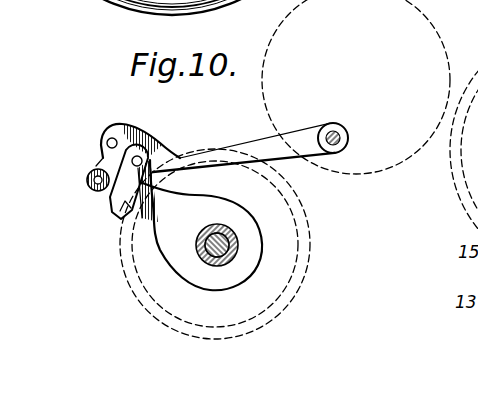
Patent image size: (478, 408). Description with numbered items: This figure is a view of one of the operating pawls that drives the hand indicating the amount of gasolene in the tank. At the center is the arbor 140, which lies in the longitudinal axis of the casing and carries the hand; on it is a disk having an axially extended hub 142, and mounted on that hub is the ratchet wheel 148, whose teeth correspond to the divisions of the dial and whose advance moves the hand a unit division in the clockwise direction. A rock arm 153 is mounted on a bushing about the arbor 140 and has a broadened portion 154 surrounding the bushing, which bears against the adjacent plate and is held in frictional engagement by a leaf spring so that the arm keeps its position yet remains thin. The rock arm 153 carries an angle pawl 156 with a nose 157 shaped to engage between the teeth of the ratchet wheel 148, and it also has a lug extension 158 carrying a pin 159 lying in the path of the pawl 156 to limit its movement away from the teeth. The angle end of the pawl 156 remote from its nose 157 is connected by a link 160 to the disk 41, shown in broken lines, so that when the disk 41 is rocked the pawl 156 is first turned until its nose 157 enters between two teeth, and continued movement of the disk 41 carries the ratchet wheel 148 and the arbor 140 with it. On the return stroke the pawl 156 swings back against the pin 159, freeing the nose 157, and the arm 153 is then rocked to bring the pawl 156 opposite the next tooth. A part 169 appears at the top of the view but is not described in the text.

The wheel rim 169 is at (93, 0).
The disk 41 is at (437, 27).
The ratchet wheel 148 is at (275, 322).
The link 160 is at (268, 148).
The arbor 140 is at (209, 259).
The broadened portion of rock arm 154 is at (243, 241).
The hub 142 is at (233, 260).
The rock arm 153 is at (145, 175).
The pawl 156 is at (106, 160).
The nose 157 is at (124, 217).
The lug extension 158 is at (90, 178).
The pin 159 is at (91, 187).